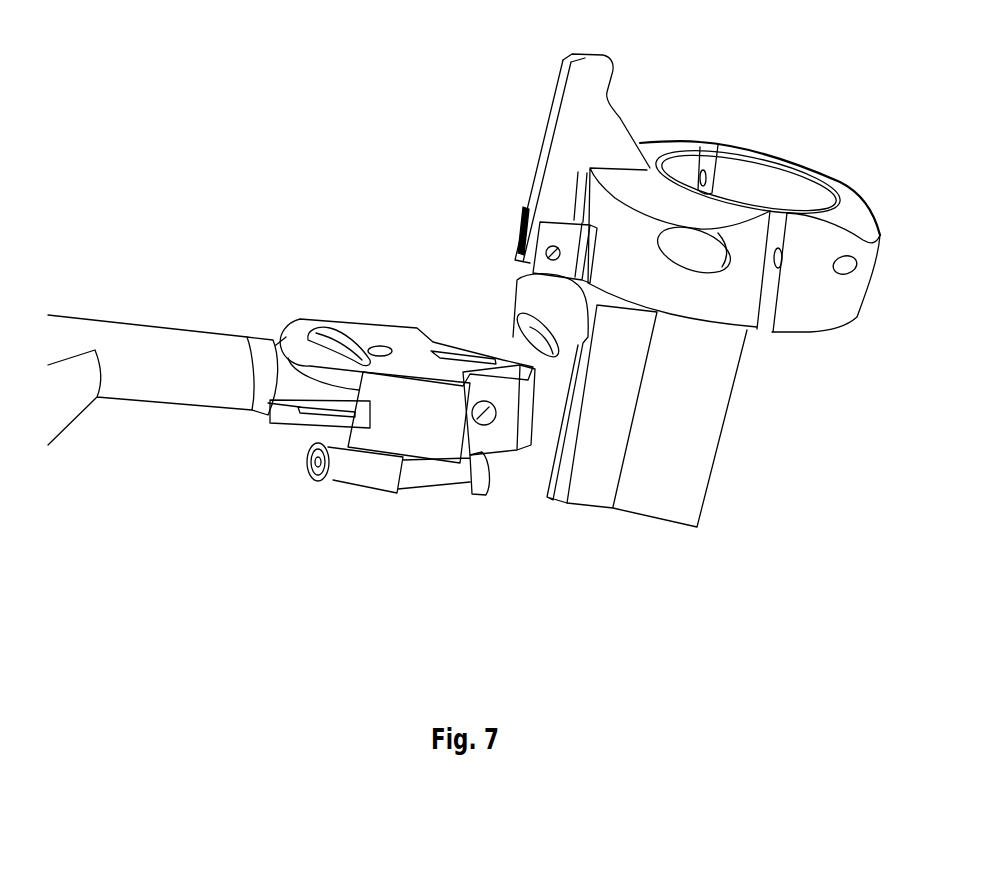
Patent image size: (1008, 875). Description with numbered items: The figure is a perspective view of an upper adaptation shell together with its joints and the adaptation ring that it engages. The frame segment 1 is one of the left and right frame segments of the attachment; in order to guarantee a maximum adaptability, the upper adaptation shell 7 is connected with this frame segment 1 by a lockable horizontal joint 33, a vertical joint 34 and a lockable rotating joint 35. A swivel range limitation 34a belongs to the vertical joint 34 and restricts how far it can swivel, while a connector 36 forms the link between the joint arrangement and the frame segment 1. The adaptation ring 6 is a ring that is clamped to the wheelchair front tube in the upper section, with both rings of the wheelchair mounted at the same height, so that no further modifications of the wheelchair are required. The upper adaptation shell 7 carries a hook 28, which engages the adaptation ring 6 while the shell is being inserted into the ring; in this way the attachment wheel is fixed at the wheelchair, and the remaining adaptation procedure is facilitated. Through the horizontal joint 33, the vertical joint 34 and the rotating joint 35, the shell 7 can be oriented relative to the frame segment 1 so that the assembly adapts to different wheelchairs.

The frame segment 1 is at (138, 328).
The adaptation ring 6 is at (758, 172).
The upper adaptation shell 7 is at (697, 413).
The hook 28 is at (572, 87).
The lockable horizontal joint 33 is at (377, 345).
The vertical joint 34 is at (484, 418).
The swivel range limitation vertical joint 34a is at (467, 473).
The lockable rotating joint 35 is at (547, 323).
The connector 36 is at (253, 407).